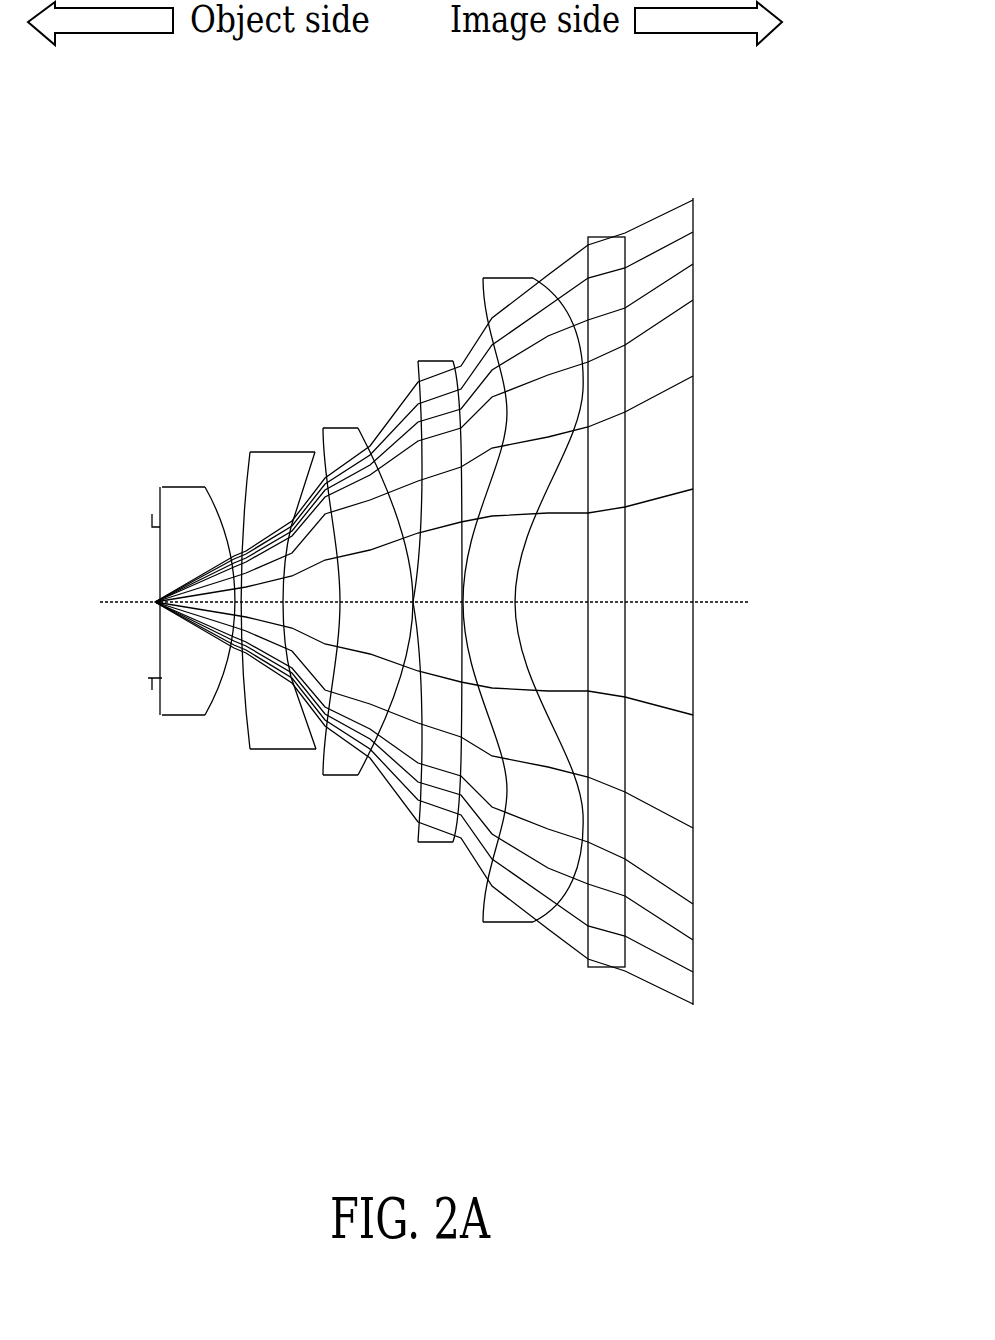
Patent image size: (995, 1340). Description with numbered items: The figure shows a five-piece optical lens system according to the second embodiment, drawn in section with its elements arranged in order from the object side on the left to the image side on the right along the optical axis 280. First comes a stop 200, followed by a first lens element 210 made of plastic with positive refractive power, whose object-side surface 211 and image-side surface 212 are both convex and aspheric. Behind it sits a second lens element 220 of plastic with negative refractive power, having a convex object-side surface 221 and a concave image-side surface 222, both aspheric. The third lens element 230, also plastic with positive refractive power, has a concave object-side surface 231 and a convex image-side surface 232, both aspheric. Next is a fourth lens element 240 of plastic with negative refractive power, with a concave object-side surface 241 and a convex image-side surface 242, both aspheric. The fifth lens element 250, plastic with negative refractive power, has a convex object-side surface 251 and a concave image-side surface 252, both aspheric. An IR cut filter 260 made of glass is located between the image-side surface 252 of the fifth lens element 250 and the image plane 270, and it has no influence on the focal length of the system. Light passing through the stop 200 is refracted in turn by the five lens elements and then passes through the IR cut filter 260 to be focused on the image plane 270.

The stop 200 is at (150, 520).
The first lens element 210 is at (165, 586).
The object-side surface of the first lens element 211 is at (160, 630).
The image-side surface of the first lens element 212 is at (228, 672).
The second lens element 220 is at (264, 580).
The object-side surface of the second lens element 221 is at (247, 710).
The image-side surface of the second lens element 222 is at (322, 718).
The third lens element 230 is at (350, 595).
The object-side surface of the third lens element 231 is at (340, 622).
The image-side surface of the third lens element 232 is at (378, 716).
The fourth lens element 240 is at (420, 595).
The object-side surface of the fourth lens element 241 is at (418, 698).
The image-side surface of the fourth lens element 242 is at (462, 813).
The fifth lens element 250 is at (510, 588).
The object-side surface of the fifth lens element 251 is at (505, 773).
The image-side surface of the fifth lens element 252 is at (576, 888).
The IR cut filter 260 is at (595, 237).
The image plane 270 is at (693, 232).
The optical axis 280 is at (727, 598).